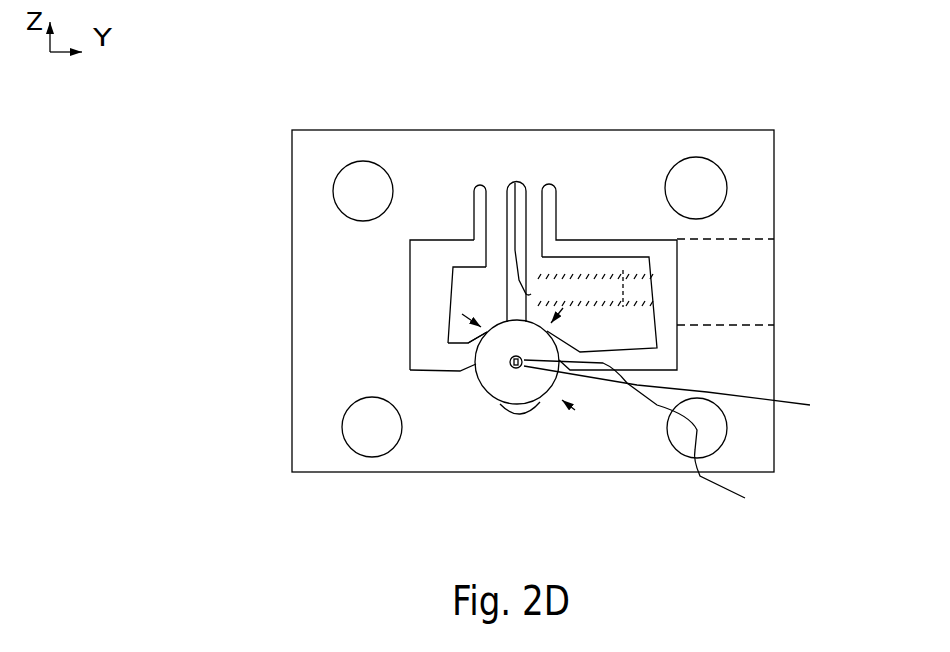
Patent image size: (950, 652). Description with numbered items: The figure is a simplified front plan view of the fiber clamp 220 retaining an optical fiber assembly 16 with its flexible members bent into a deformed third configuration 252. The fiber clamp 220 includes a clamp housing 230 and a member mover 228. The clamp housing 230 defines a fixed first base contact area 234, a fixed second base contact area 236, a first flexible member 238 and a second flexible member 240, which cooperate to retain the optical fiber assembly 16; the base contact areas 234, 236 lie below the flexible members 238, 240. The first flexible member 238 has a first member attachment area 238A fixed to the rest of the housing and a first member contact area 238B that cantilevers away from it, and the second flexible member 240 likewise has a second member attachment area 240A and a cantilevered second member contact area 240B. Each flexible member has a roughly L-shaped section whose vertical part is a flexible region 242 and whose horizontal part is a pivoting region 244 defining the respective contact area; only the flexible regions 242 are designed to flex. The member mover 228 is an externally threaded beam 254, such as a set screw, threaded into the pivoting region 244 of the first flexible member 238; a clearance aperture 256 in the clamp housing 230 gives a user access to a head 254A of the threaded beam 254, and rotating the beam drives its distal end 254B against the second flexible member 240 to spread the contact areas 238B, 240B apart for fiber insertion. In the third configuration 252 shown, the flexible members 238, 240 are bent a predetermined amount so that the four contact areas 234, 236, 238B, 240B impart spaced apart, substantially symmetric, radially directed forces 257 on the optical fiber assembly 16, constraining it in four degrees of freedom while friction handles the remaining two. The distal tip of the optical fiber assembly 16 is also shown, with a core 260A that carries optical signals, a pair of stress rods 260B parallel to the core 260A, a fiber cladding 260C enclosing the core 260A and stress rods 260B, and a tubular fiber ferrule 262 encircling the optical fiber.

The optical fiber assembly 16 is at (524, 412).
The fiber clamp 220 is at (718, 104).
The member mover 228 is at (593, 277).
The clamp housing 230 is at (286, 124).
The first base contact area 234 is at (545, 402).
The second base contact area 236 is at (492, 402).
The first flexible member 238 is at (695, 354).
The first member attachment area 238A is at (535, 188).
The first member contact area 238B is at (547, 331).
The second flexible member 240 is at (433, 315).
The second member attachment area 240A is at (486, 184).
The second member contact area 240B is at (487, 332).
The flexible region 242 is at (495, 230).
The pivoting region 244 is at (472, 329).
The third configuration 252 is at (440, 285).
The threaded beam 254 is at (620, 318).
The head 254A is at (625, 288).
The distal end 254B is at (513, 185).
The clearance aperture 256 is at (750, 252).
The radially directed forces 257 is at (478, 401).
The core 260A is at (657, 444).
The stress rods 260B is at (598, 405).
The fiber cladding 260C is at (698, 394).
The fiber ferrule 262 is at (502, 395).